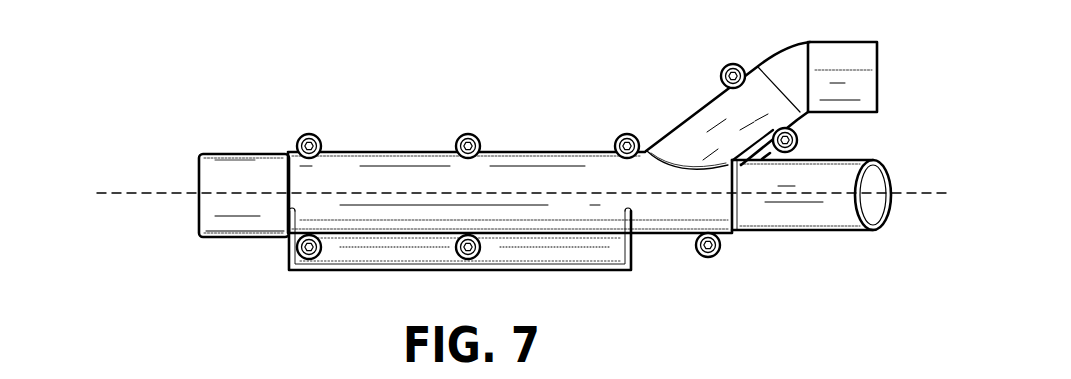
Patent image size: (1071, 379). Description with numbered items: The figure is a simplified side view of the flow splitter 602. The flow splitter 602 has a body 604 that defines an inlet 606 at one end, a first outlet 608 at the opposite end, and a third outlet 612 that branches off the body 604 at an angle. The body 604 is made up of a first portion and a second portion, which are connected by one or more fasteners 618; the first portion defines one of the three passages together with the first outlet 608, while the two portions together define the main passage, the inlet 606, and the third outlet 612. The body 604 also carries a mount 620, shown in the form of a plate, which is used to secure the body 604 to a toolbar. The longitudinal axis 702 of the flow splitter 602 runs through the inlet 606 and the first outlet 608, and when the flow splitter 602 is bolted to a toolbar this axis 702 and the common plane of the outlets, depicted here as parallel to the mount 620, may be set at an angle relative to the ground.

The flow splitter 602 is at (524, 191).
The longitudinal axis 702 is at (168, 192).
The inlet 606 is at (198, 218).
The body 604 is at (535, 165).
The third outlet 612 is at (868, 78).
The first outlet 608 is at (878, 215).
The fastener 618 is at (710, 258).
The mount 620 is at (342, 268).